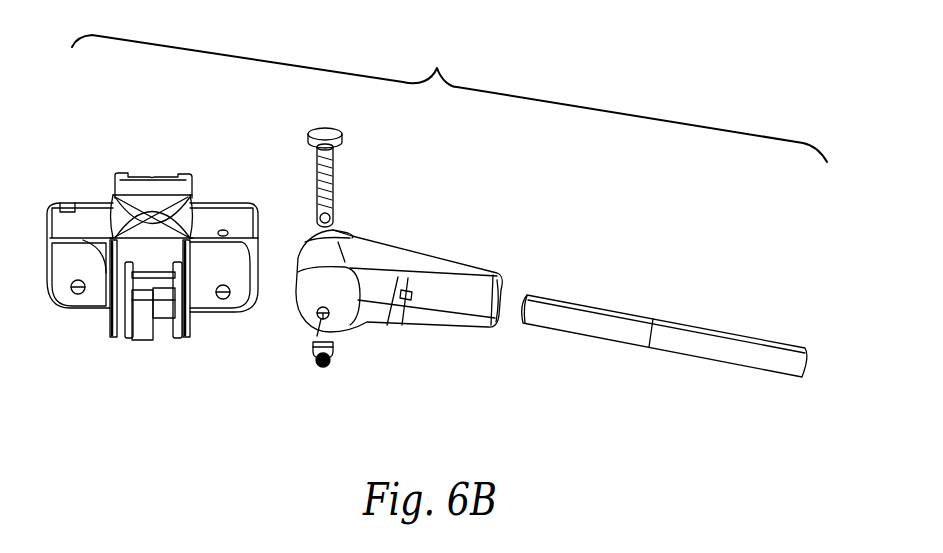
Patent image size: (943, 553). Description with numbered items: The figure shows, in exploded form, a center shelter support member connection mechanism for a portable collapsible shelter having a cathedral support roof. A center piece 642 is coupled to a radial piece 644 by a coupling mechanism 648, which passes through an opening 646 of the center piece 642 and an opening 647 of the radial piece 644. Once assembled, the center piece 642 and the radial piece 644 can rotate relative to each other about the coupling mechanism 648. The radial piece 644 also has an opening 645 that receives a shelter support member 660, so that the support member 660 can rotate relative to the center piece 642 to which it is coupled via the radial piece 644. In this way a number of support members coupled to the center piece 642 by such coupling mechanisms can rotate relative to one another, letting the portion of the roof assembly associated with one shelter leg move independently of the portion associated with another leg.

The center piece 642 is at (151, 173).
The radial piece 644 is at (423, 252).
The opening 645 is at (505, 325).
The opening 646 is at (225, 299).
The opening 647 is at (317, 330).
The coupling mechanism 648 is at (337, 181).
The shelter support member 660 is at (645, 319).